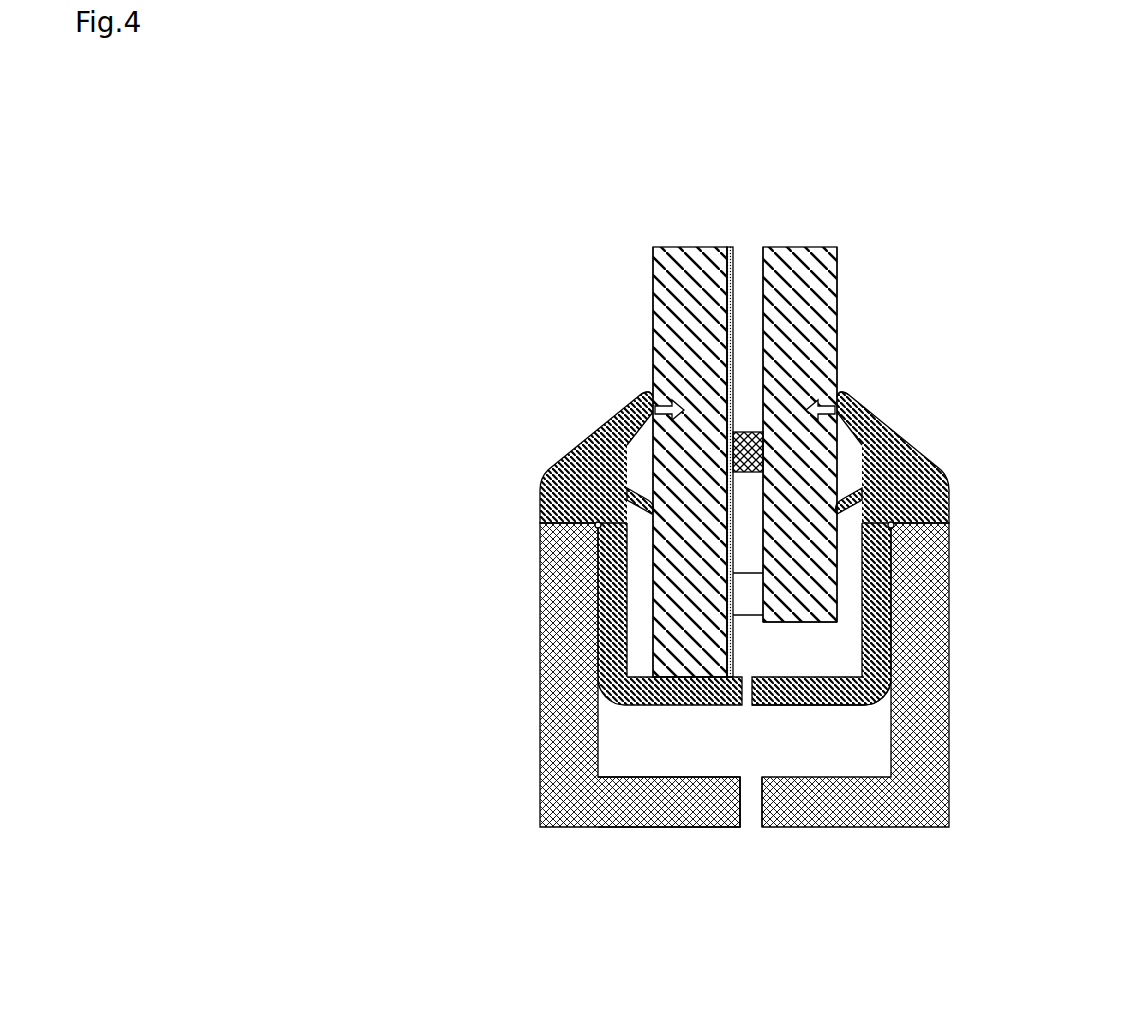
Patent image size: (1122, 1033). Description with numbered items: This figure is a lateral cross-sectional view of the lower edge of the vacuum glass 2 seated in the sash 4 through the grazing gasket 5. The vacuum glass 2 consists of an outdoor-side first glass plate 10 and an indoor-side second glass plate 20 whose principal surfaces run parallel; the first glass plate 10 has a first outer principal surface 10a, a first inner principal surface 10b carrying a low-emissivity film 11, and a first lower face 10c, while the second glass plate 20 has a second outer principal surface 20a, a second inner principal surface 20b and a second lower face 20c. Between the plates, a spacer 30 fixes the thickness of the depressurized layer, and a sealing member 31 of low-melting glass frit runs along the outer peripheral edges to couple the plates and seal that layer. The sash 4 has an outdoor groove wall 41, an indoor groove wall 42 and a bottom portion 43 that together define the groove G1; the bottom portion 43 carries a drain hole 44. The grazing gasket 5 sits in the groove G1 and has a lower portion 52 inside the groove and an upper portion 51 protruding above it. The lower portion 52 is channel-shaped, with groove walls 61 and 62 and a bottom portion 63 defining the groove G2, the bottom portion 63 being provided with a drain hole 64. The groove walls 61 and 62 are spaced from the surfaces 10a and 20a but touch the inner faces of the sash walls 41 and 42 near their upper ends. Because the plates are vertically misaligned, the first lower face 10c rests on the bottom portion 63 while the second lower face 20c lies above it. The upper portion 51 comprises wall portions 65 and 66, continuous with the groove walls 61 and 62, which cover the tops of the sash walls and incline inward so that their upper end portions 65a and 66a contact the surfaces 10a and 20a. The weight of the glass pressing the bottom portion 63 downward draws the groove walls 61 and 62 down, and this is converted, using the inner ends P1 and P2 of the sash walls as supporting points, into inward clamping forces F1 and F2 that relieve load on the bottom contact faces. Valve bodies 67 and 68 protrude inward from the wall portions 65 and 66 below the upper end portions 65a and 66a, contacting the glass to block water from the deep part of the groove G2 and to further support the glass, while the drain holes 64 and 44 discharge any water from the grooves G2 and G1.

The vacuum glass 2 is at (752, 524).
The sash 4 is at (774, 724).
The grazing gasket 5 is at (777, 625).
The first glass plate 10 is at (707, 565).
The first outer principal surface 10a is at (653, 322).
The first inner principal surface 10b is at (727, 322).
The first lower face 10c is at (690, 680).
The low-emissivity film 11 is at (735, 265).
The second glass plate 20 is at (778, 508).
The second outer principal surface 20a is at (838, 375).
The second inner principal surface 20b is at (763, 372).
The second lower face 20c is at (803, 622).
The spacer 30 is at (745, 450).
The sealing member 31 is at (752, 600).
The groove wall 41 is at (562, 705).
The groove wall 42 is at (925, 640).
The bottom portion 43 is at (628, 812).
The drain hole 44 is at (752, 830).
The upper portion 51 is at (762, 625).
The lower portion 52 is at (846, 714).
The groove wall 61 is at (612, 608).
The groove wall 62 is at (878, 606).
The bottom portion 63 is at (712, 705).
The drain hole 64 is at (749, 709).
The wall portion 65 is at (566, 449).
The upper end portion 65a is at (650, 399).
The wall portion 66 is at (930, 453).
The upper end portion 66a is at (850, 398).
The valve body 67 is at (632, 502).
The valve body 68 is at (857, 502).
The inner end P1 is at (595, 526).
The inner end P2 is at (894, 526).
The force F1 is at (671, 398).
The force F2 is at (819, 398).
The groove G1 is at (644, 764).
The groove G2 is at (853, 674).